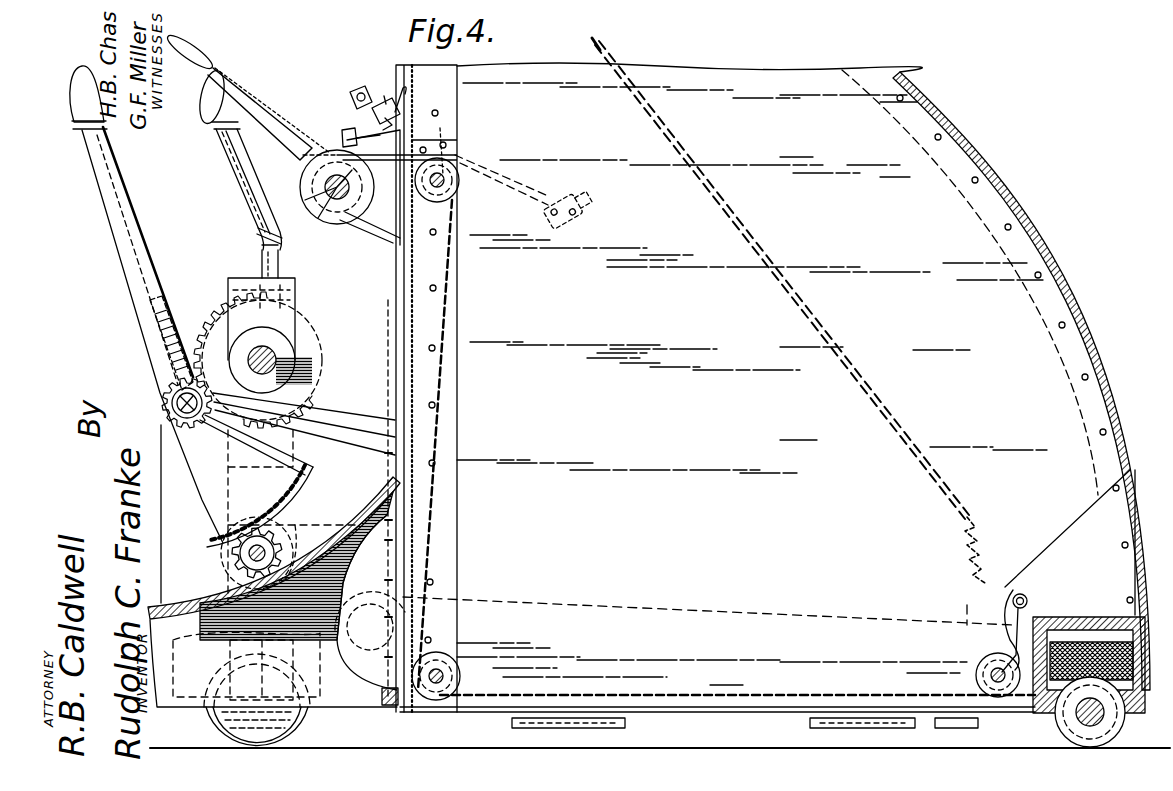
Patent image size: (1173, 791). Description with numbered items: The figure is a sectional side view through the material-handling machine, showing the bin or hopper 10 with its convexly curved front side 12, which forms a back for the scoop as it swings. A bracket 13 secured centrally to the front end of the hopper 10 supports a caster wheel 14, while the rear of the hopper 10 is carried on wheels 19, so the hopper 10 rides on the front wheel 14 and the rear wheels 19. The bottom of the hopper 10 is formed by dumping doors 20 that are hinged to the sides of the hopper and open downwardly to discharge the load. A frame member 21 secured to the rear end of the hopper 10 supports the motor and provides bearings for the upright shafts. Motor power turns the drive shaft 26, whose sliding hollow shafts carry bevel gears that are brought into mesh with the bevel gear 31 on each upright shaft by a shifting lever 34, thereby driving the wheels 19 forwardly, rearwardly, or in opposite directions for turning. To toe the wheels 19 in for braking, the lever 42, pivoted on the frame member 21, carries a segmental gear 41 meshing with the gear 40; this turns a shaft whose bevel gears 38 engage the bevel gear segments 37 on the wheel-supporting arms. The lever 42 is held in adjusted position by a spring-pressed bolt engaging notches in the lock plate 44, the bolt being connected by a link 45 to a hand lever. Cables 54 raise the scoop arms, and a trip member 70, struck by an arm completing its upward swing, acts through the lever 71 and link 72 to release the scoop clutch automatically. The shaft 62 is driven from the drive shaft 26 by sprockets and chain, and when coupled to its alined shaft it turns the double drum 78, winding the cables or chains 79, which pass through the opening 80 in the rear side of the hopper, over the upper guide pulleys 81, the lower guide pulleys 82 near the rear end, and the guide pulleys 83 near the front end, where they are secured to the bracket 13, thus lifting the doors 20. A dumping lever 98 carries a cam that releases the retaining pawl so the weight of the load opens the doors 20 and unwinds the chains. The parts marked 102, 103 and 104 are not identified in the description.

The bin or hopper 10 is at (405, 324).
The convexly curved front side 12 is at (1017, 195).
The bracket 13 is at (1063, 617).
The caster wheel 14 is at (1120, 722).
The wheels 19 is at (310, 712).
The dumping doors 20 is at (722, 712).
The frame member 21 is at (183, 602).
The drive shaft 26 is at (293, 360).
The bevel gear 31 is at (300, 420).
The shifting lever 34 is at (240, 208).
The bevel gear segments 37 is at (227, 578).
The bevel gears 38 is at (275, 528).
The gear 40 is at (285, 565).
The segmental gear 41 is at (306, 480).
The lever 42 is at (155, 345).
The lock plate 44 is at (170, 385).
The link 45 is at (133, 233).
The cables 54 is at (617, 67).
The shaft 62 is at (341, 226).
The trip member 70 is at (534, 197).
The lever 71 is at (378, 96).
The link 72 is at (353, 92).
The double drum 78 is at (303, 180).
The cables or chains 79 is at (453, 274).
The opening 80 is at (343, 140).
The upper guide pulleys 81 is at (458, 202).
The lower guide pulleys 82 is at (453, 673).
The guide pulleys 83 is at (993, 660).
The dumping lever 98 is at (283, 133).
The lever 102 is at (250, 177).
The bracket 103 is at (282, 270).
The handle 104 is at (228, 100).